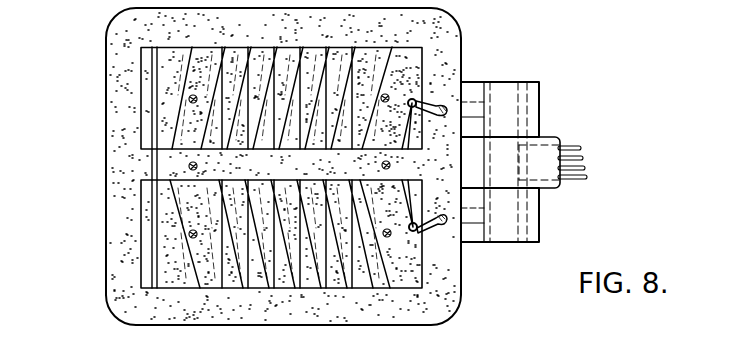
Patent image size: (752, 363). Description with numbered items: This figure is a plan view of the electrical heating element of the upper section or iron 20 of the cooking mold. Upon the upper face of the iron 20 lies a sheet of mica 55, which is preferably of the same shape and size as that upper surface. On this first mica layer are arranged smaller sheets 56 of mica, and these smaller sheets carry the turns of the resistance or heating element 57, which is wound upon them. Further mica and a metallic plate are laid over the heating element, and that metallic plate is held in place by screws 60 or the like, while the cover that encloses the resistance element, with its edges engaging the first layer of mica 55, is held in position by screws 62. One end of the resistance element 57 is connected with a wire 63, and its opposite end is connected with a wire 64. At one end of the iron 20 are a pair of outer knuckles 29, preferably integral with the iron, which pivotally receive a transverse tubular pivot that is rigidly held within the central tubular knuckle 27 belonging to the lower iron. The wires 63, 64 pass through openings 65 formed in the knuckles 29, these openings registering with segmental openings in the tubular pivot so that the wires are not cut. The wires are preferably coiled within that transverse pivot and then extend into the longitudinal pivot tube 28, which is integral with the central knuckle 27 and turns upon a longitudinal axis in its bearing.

The upper section or iron 20 is at (106, 252).
The sheet of mica 55 is at (145, 302).
The smaller sheets of mica 56 is at (405, 53).
The resistance or heating element 57 is at (397, 63).
The screws 60 is at (189, 99).
The screws 62 is at (189, 166).
The wire 63 is at (433, 101).
The wire 64 is at (435, 222).
The openings 65 is at (468, 101).
The outer knuckles 29 is at (540, 92).
The central tubular knuckle 27 is at (500, 148).
The pivot tube 28 is at (547, 158).